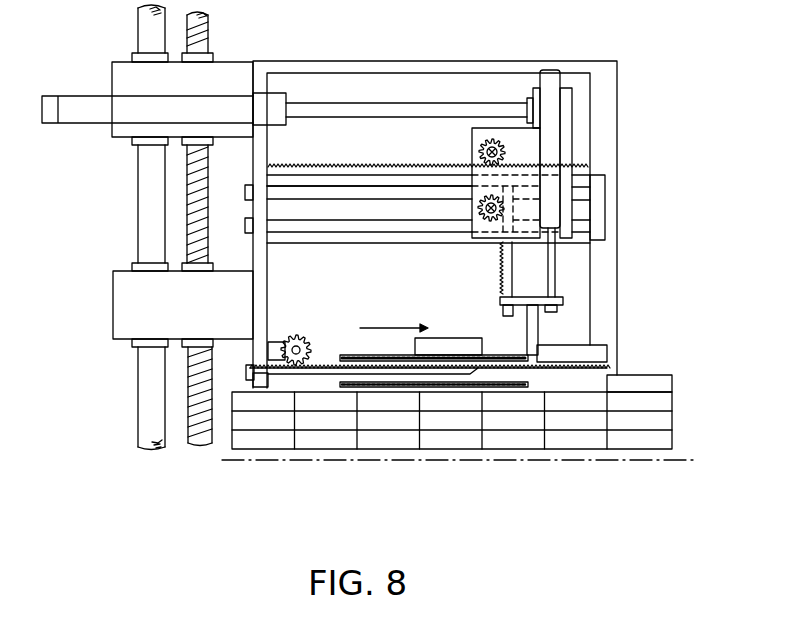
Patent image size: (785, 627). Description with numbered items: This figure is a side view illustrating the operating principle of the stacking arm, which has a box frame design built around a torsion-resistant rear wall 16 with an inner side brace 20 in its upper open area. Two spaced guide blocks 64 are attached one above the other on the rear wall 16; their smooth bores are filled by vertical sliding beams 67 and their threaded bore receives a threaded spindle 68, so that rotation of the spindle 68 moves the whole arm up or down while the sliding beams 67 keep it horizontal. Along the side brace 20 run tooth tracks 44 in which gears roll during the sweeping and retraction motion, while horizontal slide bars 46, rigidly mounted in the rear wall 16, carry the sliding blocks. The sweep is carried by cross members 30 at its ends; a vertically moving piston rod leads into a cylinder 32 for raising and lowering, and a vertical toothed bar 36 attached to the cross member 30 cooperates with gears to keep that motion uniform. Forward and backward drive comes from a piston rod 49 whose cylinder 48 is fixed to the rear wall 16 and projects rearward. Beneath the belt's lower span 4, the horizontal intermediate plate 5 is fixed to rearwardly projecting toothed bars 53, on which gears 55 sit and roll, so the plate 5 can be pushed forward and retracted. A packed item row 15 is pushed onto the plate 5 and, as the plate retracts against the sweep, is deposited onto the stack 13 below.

The lower span 4 is at (400, 388).
The intermediate plate 5 is at (578, 346).
The stack of packed items 13 is at (668, 422).
The packed item row 15 is at (460, 338).
The rear wall 16 is at (260, 156).
The inner side brace 20 is at (417, 212).
The cross member 30 is at (562, 298).
The cylinder 32 is at (555, 137).
The toothed bar 36 is at (503, 253).
The tooth track 44 is at (413, 162).
The slide bar 46 is at (328, 190).
The cylinder 48 is at (75, 100).
The piston rod 49 is at (459, 107).
The toothed bar 53 is at (330, 365).
The gear 55 is at (293, 336).
The guide block 64 is at (124, 70).
The sliding beam 67 is at (152, 383).
The threaded spindle 68 is at (205, 30).